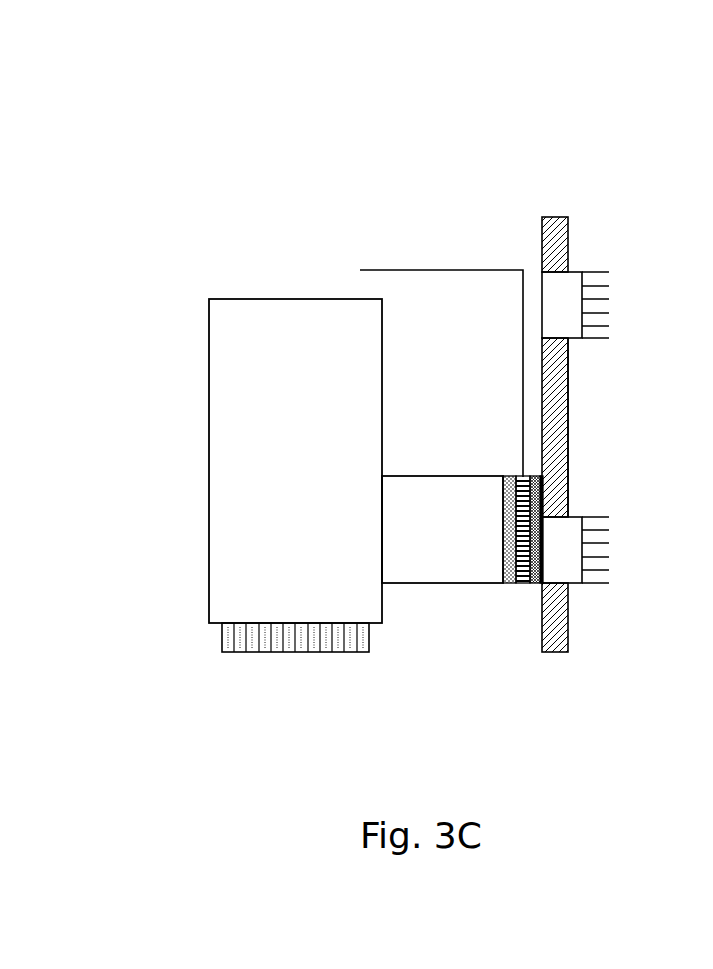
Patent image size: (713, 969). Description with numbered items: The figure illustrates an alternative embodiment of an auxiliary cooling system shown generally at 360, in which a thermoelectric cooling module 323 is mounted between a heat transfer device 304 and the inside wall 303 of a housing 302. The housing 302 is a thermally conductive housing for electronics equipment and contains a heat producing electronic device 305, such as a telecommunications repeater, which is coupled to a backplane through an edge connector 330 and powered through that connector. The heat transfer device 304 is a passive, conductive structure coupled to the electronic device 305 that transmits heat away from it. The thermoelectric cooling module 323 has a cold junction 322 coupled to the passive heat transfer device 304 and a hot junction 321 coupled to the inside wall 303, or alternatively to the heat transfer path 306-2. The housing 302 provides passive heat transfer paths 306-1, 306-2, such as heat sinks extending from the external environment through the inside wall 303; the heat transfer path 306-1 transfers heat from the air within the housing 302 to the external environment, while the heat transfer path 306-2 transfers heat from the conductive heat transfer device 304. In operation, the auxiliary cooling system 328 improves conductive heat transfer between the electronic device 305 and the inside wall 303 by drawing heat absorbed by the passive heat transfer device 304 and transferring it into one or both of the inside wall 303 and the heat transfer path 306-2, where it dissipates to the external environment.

The auxiliary cooling system embodiment 360 is at (422, 149).
The electronic device 305 is at (209, 463).
The edge connector 330 is at (368, 633).
The heat transfer device 304 is at (442, 584).
The cold junction 322 is at (510, 477).
The hot junction 321 is at (537, 477).
The thermoelectric cooling module 323 is at (523, 584).
The auxiliary cooling system 328 is at (394, 368).
The inside wall 303 is at (542, 230).
The housing 302 is at (568, 435).
The heat transfer path 306-1 is at (570, 340).
The heat transfer path 306-2 is at (567, 584).